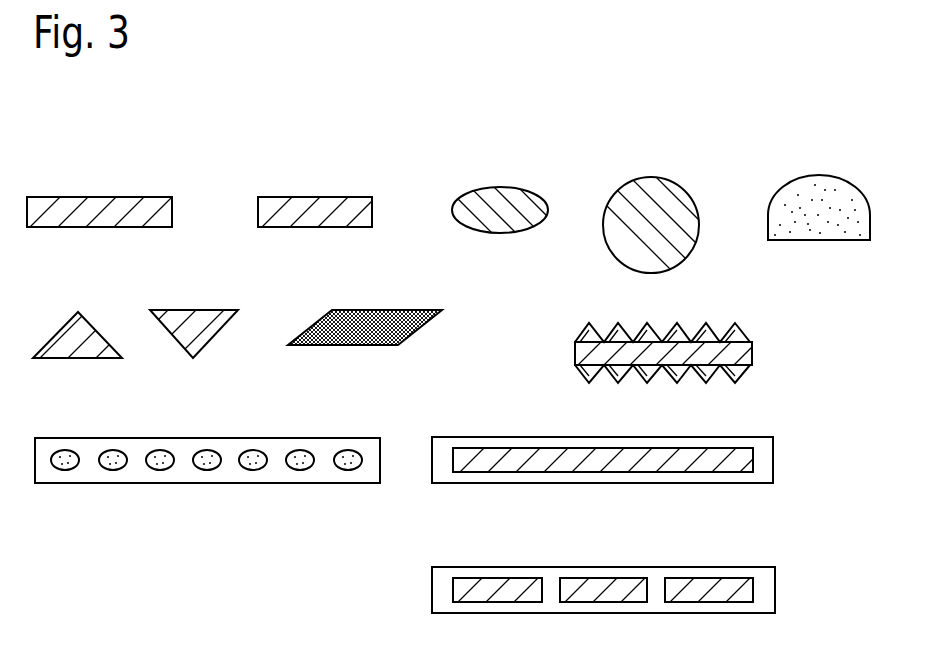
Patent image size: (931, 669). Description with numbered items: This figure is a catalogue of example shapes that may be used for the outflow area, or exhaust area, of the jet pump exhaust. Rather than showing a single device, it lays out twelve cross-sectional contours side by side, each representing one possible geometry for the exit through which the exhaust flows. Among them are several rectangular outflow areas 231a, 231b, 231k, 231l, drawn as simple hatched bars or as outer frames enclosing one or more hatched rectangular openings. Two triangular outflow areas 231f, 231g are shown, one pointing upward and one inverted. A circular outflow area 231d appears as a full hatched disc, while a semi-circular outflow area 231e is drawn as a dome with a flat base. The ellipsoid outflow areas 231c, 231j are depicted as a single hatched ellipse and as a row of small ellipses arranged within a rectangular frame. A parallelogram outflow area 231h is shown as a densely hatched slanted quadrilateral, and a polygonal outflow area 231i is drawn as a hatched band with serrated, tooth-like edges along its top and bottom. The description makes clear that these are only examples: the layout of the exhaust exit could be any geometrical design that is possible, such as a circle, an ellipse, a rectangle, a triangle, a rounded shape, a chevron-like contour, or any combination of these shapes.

The rectangular exhaust outflow area 231a is at (101, 197).
The rectangular exhaust outflow area 231b is at (312, 197).
The ellipsoid exhaust outflow area 231c is at (500, 188).
The circular exhaust outflow area 231d is at (651, 178).
The semi-circular exhaust outflow area 231e is at (821, 176).
The triangular exhaust outflow area 231f is at (78, 312).
The triangular exhaust outflow area 231g is at (194, 310).
The parallelogram exhaust outflow area 231h is at (386, 310).
The polygonal exhaust outflow area 231i is at (705, 323).
The ellipsoid exhaust outflow area 231j is at (206, 438).
The rectangular exhaust outflow area 231k is at (497, 437).
The rectangular exhaust outflow area 231l is at (601, 567).